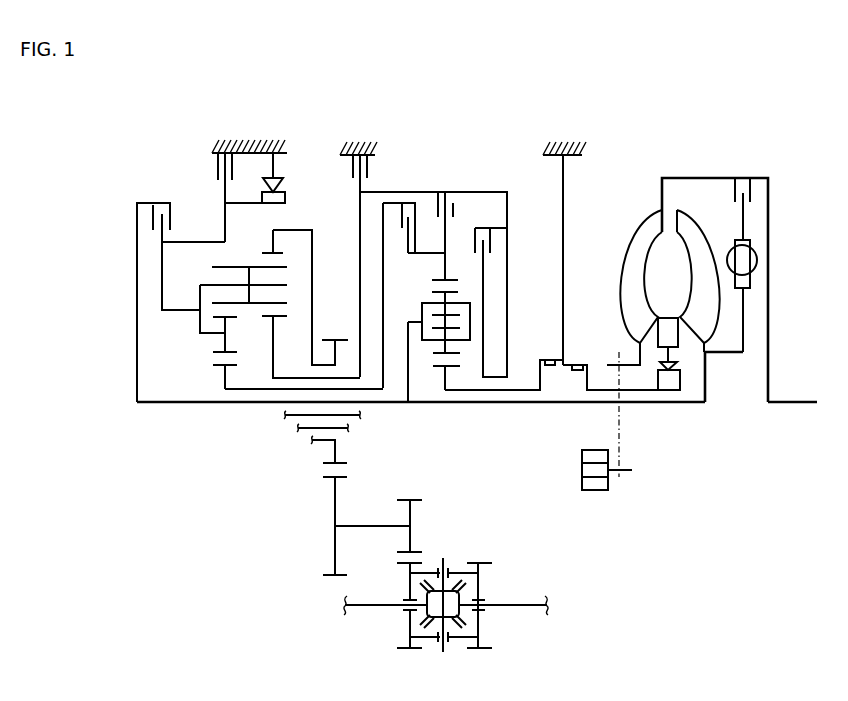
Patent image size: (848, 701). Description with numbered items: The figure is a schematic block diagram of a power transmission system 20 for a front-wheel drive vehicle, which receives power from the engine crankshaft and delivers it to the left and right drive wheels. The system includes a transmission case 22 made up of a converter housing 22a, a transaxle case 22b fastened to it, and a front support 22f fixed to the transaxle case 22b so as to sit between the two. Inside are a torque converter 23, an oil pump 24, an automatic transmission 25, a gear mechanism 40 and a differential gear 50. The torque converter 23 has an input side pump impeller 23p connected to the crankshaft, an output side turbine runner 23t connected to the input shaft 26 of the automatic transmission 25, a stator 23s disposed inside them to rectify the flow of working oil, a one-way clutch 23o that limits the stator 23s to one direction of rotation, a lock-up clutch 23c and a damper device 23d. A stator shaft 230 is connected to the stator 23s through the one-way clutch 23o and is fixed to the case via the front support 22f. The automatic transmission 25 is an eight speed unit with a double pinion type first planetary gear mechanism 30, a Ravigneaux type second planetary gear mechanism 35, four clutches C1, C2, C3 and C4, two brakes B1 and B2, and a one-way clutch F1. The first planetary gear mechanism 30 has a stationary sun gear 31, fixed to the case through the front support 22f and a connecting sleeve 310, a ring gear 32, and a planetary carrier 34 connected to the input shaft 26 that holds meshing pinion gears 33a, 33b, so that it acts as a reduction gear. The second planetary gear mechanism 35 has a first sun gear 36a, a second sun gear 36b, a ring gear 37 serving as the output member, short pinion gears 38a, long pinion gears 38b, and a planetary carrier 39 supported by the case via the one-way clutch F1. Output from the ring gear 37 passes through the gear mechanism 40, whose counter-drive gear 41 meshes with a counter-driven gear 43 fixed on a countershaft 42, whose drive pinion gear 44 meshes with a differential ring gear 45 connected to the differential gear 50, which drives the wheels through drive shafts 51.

The power transmission system 20 is at (705, 258).
The transmission case 22 is at (217, 137).
The converter housing 22a is at (580, 142).
The transaxle case 22b is at (377, 143).
The front support 22f is at (566, 240).
The torque converter 23 is at (705, 295).
The pump impeller 23p is at (633, 240).
The turbine runner 23t is at (699, 232).
The stator 23s is at (668, 322).
The one-way clutch 23o is at (690, 380).
The lock-up clutch 23c is at (758, 193).
The damper device 23d is at (762, 276).
The stator shaft 230 is at (598, 385).
The oil pump 24 is at (578, 472).
The automatic transmission 25 is at (523, 139).
The input shaft 26 is at (676, 403).
The first planetary gear mechanism 30 is at (500, 289).
The sun gear 31 is at (443, 375).
The connecting sleeve 310 is at (475, 393).
The ring gear 32 is at (455, 278).
The pinion gear 33a is at (457, 325).
The pinion gear 33b is at (459, 290).
The planetary carrier 34 is at (420, 315).
The second planetary gear mechanism 35 is at (240, 316).
The first sun gear 36a is at (218, 369).
The second sun gear 36b is at (266, 318).
The ring gear 37 is at (289, 232).
The short pinion gear 38a is at (221, 340).
The long pinion gear 38b is at (213, 266).
The planetary carrier 39 is at (200, 292).
The gear mechanism 40 is at (340, 493).
The counter-drive gear 41 is at (330, 465).
The countershaft 42 is at (360, 525).
The counter-driven gear 43 is at (333, 547).
The drive pinion gear 44 is at (414, 500).
The differential ring gear 45 is at (403, 653).
The differential gear 50 is at (445, 600).
The drive shaft 51 is at (370, 607).
The brake B1 is at (368, 170).
The brake B2 is at (217, 171).
The clutch C1 is at (410, 218).
The clutch C2 is at (153, 220).
The clutch C3 is at (455, 205).
The clutch C4 is at (487, 231).
The one-way clutch F1 is at (285, 199).